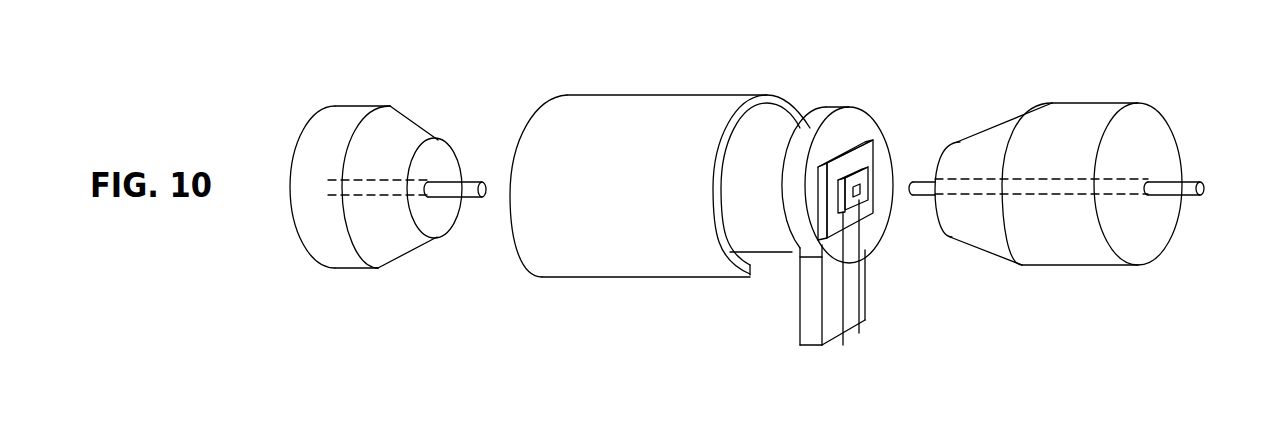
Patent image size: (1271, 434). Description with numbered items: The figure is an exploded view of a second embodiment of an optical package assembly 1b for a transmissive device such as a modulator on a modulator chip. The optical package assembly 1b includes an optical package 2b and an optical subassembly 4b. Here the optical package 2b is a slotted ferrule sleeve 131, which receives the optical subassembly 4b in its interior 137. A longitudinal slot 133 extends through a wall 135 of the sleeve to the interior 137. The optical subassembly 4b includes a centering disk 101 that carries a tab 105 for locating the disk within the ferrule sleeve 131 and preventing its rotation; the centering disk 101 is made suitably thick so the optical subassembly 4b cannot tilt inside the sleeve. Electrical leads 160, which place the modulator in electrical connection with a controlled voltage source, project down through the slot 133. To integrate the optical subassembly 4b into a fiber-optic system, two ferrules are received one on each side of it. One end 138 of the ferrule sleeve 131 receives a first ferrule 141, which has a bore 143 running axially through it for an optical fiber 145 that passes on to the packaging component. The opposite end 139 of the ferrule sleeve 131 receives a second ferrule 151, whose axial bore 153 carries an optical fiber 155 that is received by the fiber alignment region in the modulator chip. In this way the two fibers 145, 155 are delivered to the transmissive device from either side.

The optical package assembly 1b is at (574, 311).
The optical package 2b is at (574, 65).
The optical subassembly 4b is at (892, 102).
The centering disk 101 is at (895, 268).
The tab 105 is at (813, 338).
The ferrule sleeve 131 is at (635, 108).
The longitudinal slot 133 is at (771, 275).
The wall 135 is at (720, 253).
The interior 137 is at (775, 132).
The end of the ferrule sleeve 138 is at (543, 108).
The end of the ferrule sleeve 139 is at (753, 113).
The first ferrule 141 is at (352, 117).
The bore 143 is at (333, 198).
The optical fiber 145 is at (465, 181).
The second ferrule 151 is at (1085, 118).
The bore 153 is at (1062, 200).
The optical fiber 155 is at (927, 176).
The electrical leads 160 is at (843, 341).